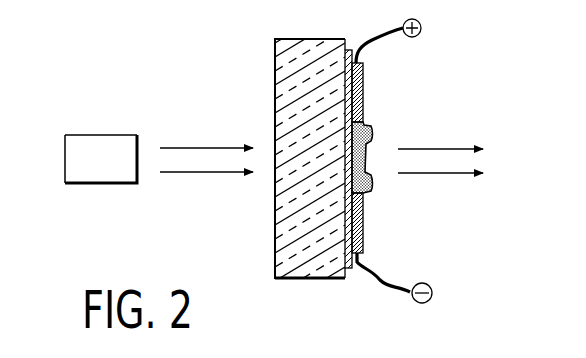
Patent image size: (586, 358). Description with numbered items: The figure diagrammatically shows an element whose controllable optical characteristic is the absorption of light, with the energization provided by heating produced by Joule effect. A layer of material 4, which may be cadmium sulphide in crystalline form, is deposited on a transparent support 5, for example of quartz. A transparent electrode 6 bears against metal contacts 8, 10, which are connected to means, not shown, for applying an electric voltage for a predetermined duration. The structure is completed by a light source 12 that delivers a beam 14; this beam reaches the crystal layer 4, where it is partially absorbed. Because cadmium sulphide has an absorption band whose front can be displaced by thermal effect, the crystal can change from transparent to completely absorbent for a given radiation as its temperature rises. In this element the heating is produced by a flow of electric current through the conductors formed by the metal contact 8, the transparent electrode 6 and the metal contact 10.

The layer of material 4 is at (355, 270).
The transparent support 5 is at (292, 82).
The transparent electrode 6 is at (362, 148).
The metal contact 8 is at (363, 80).
The metal contact 10 is at (365, 225).
The light source 12 is at (100, 148).
The beam 14 is at (213, 148).